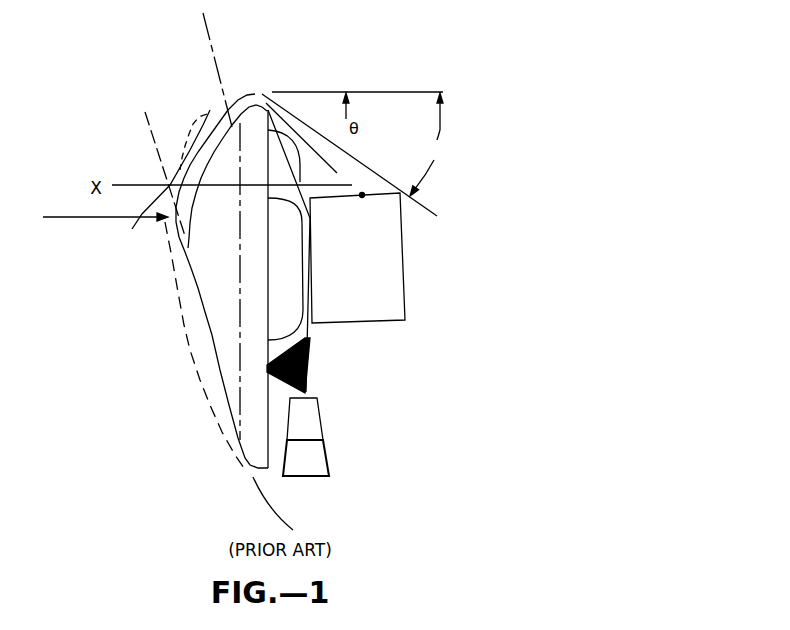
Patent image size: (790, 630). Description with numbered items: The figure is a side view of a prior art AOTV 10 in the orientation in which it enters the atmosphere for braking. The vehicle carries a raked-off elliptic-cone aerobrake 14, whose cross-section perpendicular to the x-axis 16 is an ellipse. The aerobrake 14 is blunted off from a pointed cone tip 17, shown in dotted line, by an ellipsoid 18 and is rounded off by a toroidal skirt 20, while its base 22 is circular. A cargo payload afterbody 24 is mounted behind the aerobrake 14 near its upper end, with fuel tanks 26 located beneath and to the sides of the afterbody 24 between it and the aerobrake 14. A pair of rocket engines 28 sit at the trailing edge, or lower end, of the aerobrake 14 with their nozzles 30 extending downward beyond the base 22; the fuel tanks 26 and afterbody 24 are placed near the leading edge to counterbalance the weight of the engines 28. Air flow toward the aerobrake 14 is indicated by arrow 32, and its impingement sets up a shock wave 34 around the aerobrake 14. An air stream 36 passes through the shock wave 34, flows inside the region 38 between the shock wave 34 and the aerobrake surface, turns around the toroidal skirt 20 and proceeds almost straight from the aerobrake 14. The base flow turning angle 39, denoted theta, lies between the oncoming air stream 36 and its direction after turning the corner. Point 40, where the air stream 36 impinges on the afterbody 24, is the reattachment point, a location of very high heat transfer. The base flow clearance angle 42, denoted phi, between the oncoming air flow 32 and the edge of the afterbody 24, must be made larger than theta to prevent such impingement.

The prior art AOTV 10 is at (239, 63).
The aerobrake 14 is at (210, 332).
The x-axis 16 is at (355, 184).
The pointed cone tip 17 is at (204, 112).
The ellipsoid 18 is at (200, 175).
The toroidal skirt 20 is at (248, 472).
The base 22 is at (320, 440).
The cargo payload afterbody 24 is at (390, 313).
The fuel tanks 26 is at (303, 179).
The rocket engines 28 is at (312, 409).
The nozzles 30 is at (322, 463).
The arrow 32 is at (88, 217).
The shock wave 34 is at (212, 423).
The air stream 36 is at (203, 162).
The region 38 is at (185, 217).
The base flow turning angle 39 is at (338, 164).
The reattachment point 40 is at (362, 197).
The base flow clearance angle 42 is at (443, 123).